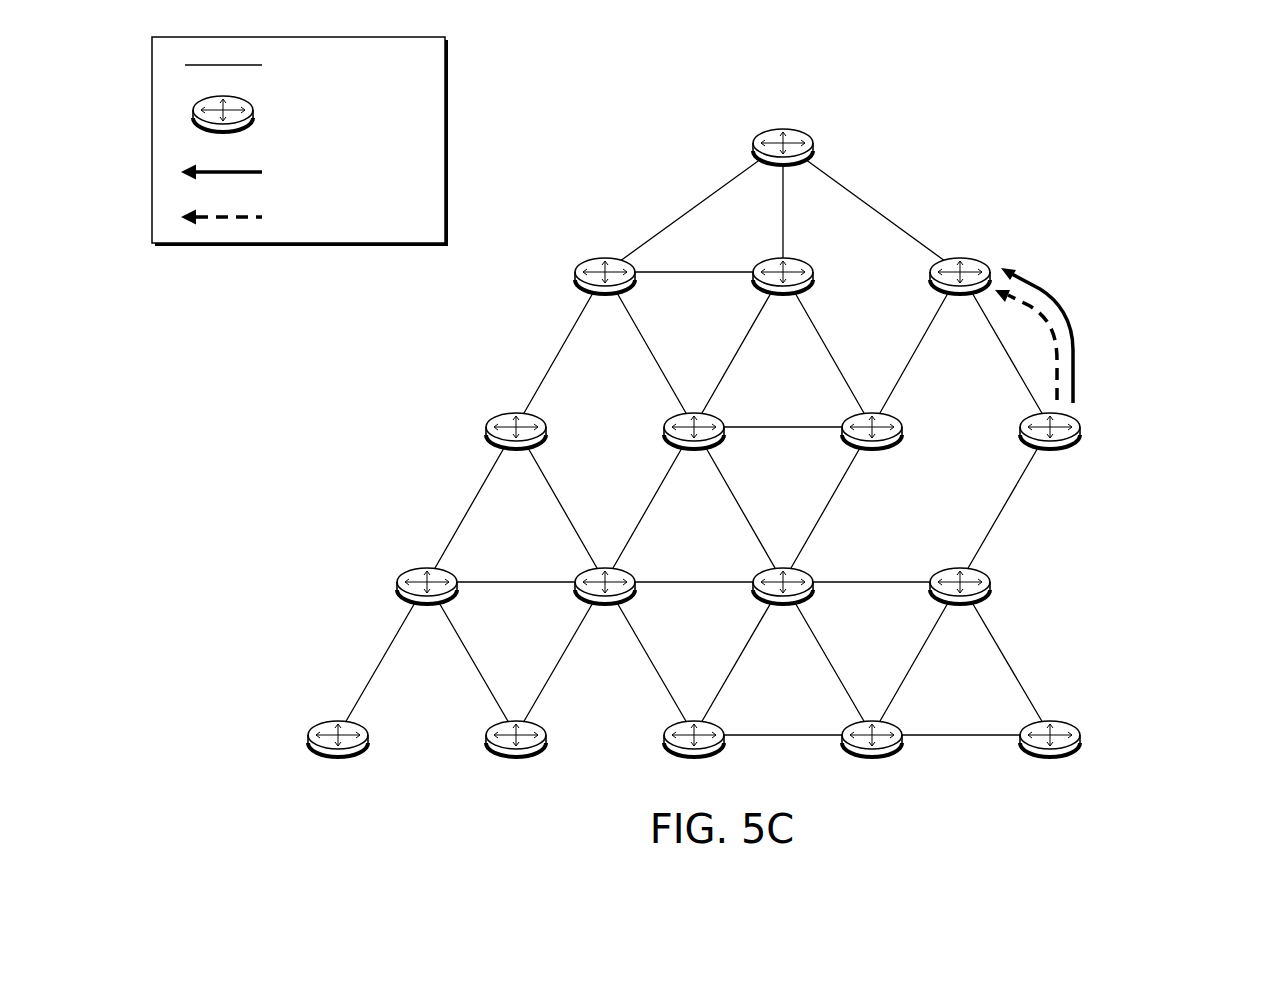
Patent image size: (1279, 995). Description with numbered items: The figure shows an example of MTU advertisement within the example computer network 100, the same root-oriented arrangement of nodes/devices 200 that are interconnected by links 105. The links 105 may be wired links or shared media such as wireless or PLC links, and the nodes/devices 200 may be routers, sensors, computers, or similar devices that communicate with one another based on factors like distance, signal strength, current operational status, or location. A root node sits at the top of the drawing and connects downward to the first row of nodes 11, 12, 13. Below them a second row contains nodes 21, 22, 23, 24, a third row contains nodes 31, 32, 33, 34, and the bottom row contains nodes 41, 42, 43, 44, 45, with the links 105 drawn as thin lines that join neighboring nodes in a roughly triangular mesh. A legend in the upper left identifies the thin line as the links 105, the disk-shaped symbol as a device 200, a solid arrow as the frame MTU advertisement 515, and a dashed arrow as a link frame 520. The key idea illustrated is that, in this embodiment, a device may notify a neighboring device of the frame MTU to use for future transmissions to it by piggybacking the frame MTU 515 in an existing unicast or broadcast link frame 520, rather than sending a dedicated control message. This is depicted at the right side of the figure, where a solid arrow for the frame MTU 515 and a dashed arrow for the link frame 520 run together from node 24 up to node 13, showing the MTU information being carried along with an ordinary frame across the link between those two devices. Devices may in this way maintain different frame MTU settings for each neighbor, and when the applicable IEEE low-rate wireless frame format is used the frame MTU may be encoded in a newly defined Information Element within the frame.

The computer network 100 is at (1204, 88).
The links 105 is at (290, 65).
The nodes/devices 200 is at (302, 114).
The frame MTU 515 is at (299, 171).
The link frames 520 is at (293, 216).
The node 11 is at (605, 294).
The node 12 is at (783, 294).
The node 13 is at (960, 294).
The node 21 is at (516, 449).
The node 22 is at (694, 449).
The node 23 is at (872, 449).
The node 24 is at (1050, 449).
The node 31 is at (427, 604).
The node 32 is at (605, 604).
The node 33 is at (783, 604).
The node 34 is at (960, 604).
The node 41 is at (338, 757).
The node 42 is at (516, 757).
The node 43 is at (694, 757).
The node 44 is at (872, 757).
The node 45 is at (1050, 757).